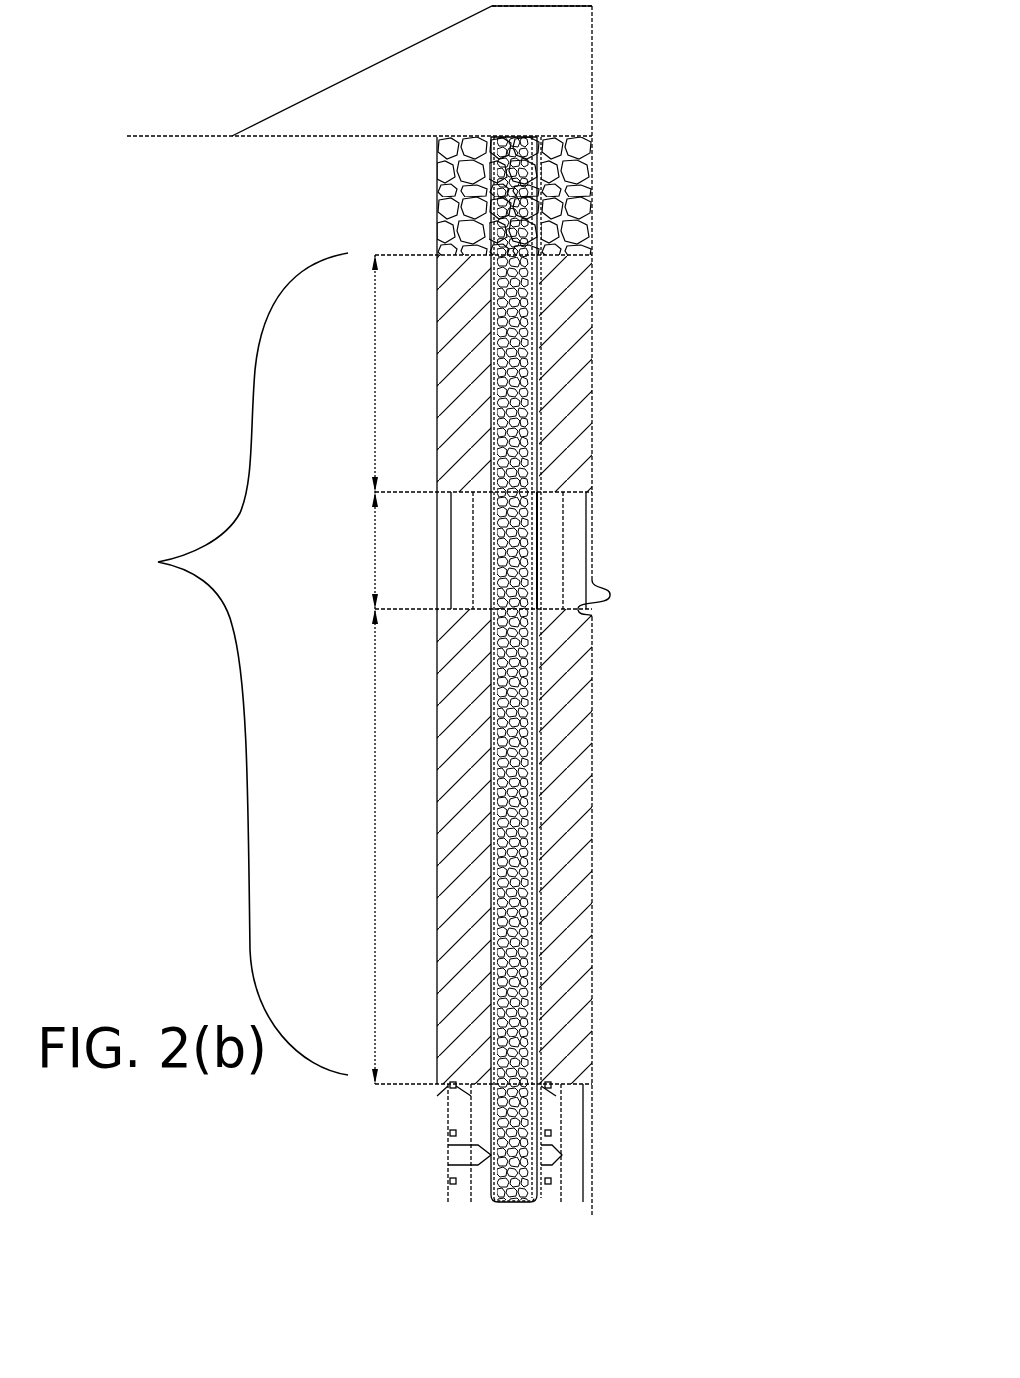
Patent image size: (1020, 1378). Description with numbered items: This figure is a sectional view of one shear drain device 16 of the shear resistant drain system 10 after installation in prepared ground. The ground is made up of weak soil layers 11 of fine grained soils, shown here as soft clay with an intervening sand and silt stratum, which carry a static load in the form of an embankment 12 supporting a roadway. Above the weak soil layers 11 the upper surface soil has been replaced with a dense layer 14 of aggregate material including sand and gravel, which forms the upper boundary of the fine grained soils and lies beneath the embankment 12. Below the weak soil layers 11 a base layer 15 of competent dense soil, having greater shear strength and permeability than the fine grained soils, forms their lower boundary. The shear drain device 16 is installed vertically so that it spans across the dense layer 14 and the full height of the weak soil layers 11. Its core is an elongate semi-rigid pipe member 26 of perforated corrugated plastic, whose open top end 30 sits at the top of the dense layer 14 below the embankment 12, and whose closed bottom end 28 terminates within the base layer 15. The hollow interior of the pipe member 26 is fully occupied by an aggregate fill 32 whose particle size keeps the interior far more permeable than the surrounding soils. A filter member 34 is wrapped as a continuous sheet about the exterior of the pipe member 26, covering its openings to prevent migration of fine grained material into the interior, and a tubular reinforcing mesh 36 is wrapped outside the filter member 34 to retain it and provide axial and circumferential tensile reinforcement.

The shear resistant drain system 10 is at (848, 111).
The weak soil layers 11 is at (332, 668).
The embankment 12 is at (357, 107).
The dense layer 14 is at (452, 212).
The base layer 15 is at (457, 1173).
The shear drain device 16 is at (539, 579).
The pipe member 26 is at (533, 780).
The bottom end 28 is at (515, 1205).
The top end 30 is at (523, 137).
The aggregate fill 32 is at (507, 720).
The filter member 34 is at (538, 871).
The mesh 36 is at (537, 937).